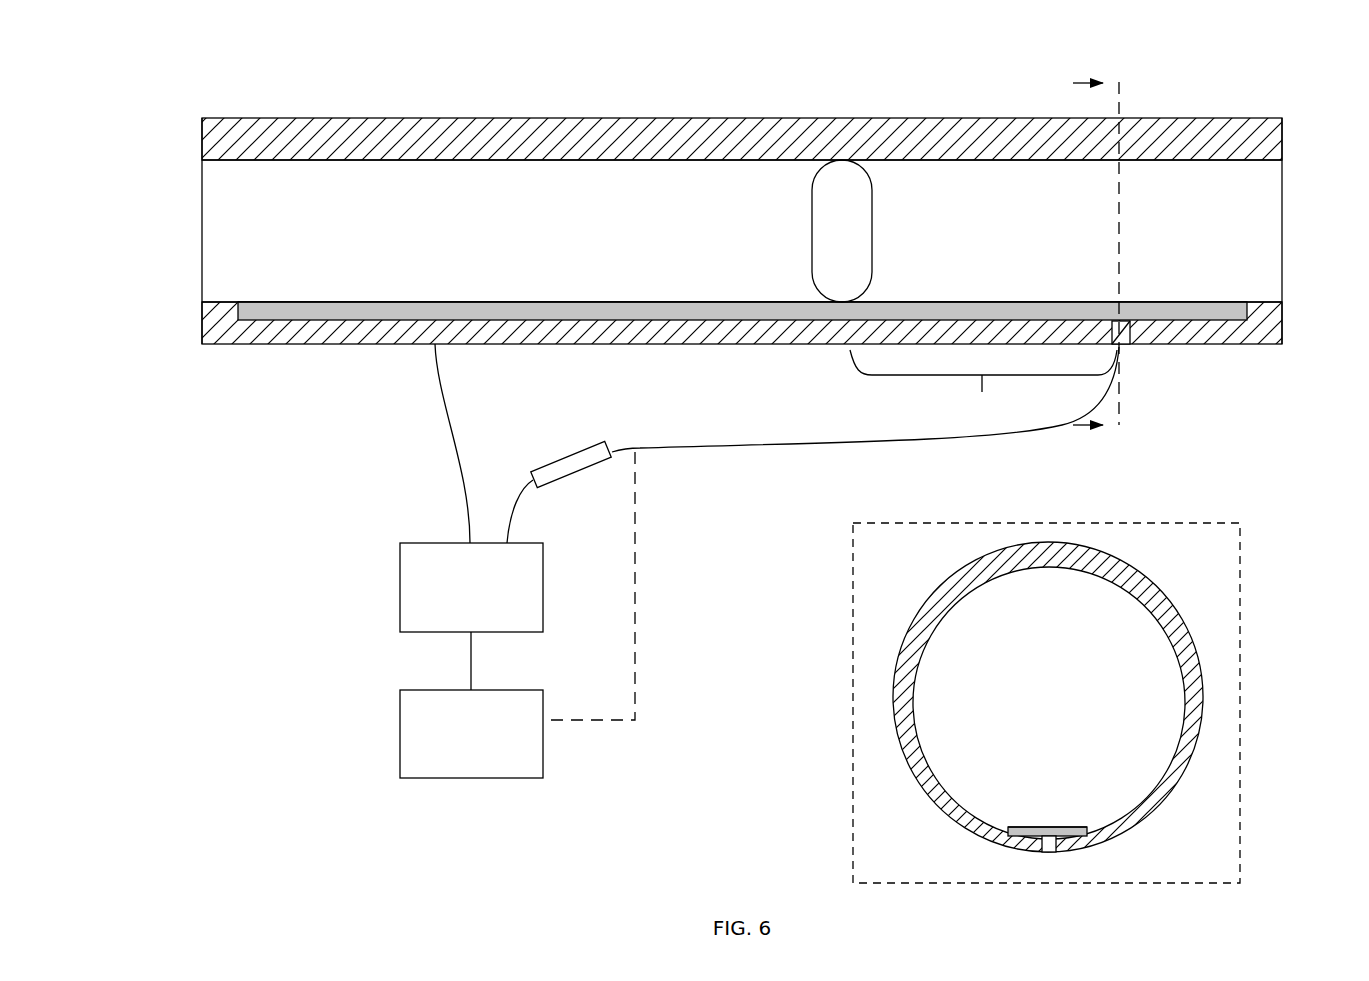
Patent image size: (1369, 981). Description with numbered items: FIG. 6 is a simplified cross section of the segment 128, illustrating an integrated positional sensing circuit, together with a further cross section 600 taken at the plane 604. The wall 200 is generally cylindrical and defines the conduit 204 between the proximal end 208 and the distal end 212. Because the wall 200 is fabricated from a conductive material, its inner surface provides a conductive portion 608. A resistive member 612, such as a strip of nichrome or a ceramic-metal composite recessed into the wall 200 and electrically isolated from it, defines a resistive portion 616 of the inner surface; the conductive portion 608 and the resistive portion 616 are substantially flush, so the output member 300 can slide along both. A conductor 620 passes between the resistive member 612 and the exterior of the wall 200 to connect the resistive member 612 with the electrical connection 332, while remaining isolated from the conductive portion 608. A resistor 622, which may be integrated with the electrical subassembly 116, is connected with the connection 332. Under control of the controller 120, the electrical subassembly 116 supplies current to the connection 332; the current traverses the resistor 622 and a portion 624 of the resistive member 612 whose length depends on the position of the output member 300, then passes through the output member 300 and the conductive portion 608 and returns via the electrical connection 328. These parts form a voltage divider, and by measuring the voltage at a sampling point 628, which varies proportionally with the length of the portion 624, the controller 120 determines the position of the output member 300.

The segment 128 is at (734, 395).
The wall 200 is at (734, 192).
The conduit 204 is at (742, 231).
The proximal end 208 is at (202, 232).
The distal end 212 is at (1282, 218).
The output member 300 is at (850, 182).
The plane 604 is at (1119, 92).
The conductive portion 608 is at (375, 162).
The resistive member 612 is at (669, 300).
The resistive portion 616 is at (488, 302).
The conductor 620 is at (1130, 332).
The resistor 622 is at (563, 450).
The portion of the resistive member 624 is at (983, 387).
The sampling point 628 is at (635, 458).
The electrical connection 328 is at (440, 414).
The electrical connection 332 is at (708, 448).
The electrical subassembly 116 is at (471, 587).
The controller 120 is at (471, 734).
The cross section 600 is at (1097, 703).